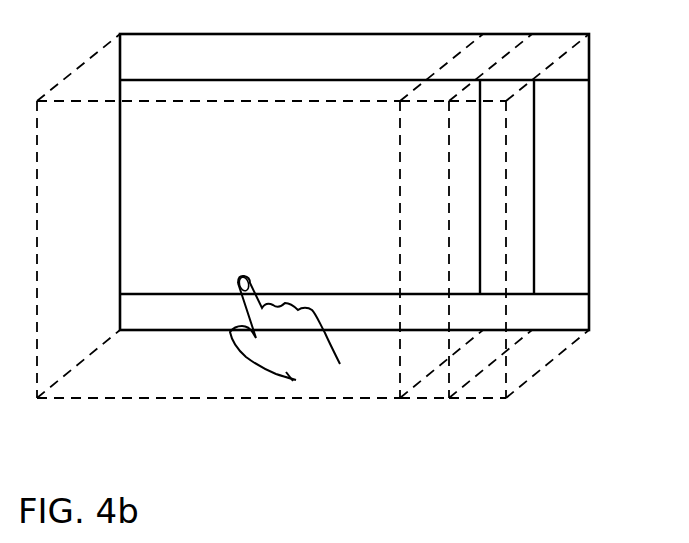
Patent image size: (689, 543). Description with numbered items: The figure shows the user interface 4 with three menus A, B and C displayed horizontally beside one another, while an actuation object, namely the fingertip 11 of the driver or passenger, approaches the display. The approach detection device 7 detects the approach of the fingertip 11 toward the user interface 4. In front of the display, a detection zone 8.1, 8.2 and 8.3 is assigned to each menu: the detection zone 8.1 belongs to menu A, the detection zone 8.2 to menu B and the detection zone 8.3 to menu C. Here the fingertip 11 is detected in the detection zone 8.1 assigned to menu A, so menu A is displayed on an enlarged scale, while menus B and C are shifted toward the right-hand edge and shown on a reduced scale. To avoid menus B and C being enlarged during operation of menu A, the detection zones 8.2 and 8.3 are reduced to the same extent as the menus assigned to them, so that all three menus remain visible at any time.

The user interface 4 is at (567, 212).
The approach detection device 7 is at (576, 63).
The detection zone 8.1 is at (157, 388).
The detection zone 8.2 is at (428, 387).
The detection zone 8.3 is at (492, 387).
The fingertip 11 is at (292, 357).